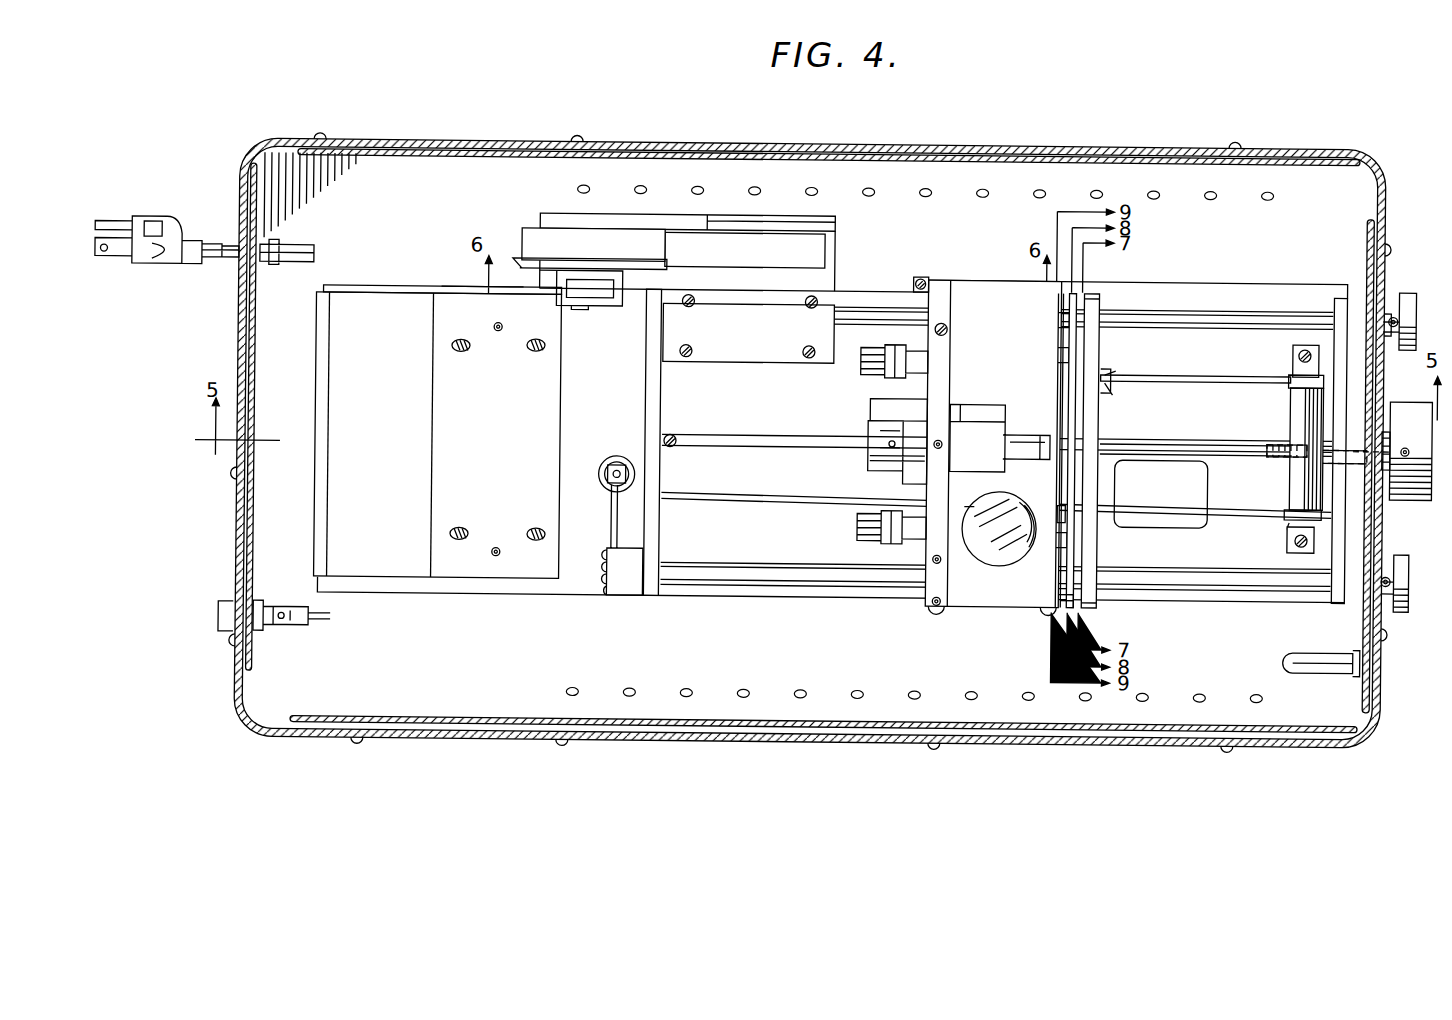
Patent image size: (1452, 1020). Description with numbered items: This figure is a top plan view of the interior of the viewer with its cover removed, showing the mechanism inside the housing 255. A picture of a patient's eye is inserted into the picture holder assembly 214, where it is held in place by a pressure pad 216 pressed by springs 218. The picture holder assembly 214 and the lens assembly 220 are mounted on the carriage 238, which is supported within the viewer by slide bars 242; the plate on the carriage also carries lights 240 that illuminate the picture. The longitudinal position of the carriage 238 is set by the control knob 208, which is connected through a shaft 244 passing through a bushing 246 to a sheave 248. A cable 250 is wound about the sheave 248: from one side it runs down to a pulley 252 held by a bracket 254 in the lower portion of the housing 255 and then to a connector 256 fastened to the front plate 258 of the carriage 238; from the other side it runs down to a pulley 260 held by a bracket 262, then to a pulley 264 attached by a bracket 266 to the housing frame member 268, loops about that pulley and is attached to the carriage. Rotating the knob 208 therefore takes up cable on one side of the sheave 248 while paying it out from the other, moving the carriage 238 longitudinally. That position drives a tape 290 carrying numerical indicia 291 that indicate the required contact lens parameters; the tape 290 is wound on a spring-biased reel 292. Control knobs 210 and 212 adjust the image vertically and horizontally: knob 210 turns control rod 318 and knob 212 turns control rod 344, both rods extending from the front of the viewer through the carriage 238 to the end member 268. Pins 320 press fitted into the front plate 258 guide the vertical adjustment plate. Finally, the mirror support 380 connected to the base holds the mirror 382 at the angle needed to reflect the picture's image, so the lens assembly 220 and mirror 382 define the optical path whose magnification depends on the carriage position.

The control knob 208 is at (1410, 494).
The control knob 210 is at (1403, 600).
The control knob 212 is at (1408, 300).
The picture holder assembly 214 is at (1070, 598).
The pressure pad 216 is at (1055, 420).
The springs 218 is at (1058, 500).
The lens assembly 220 is at (1050, 445).
The carriage 238 is at (930, 490).
The lights 240 is at (990, 500).
The slide bars 242 is at (862, 323).
The shaft 244 is at (1325, 448).
The bushing 246 is at (1330, 452).
The sheave 248 is at (1310, 410).
The cable 250 is at (742, 495).
The pulley 252 is at (1290, 375).
The bracket 254 is at (1292, 349).
The housing 255 is at (1364, 738).
The connector 256 is at (1104, 380).
The front plate 258 is at (1098, 338).
The pulley 260 is at (1300, 528).
The bracket 262 is at (1300, 550).
The pulley 264 is at (618, 459).
The bracket 266 is at (605, 548).
The housing frame member 268 is at (650, 590).
The tape 290 is at (775, 247).
The numerical indicia 291 is at (628, 242).
The reel 292 is at (530, 230).
The control rod 318 is at (790, 578).
The pins 320 is at (1098, 396).
The control rod 344 is at (880, 305).
The mirror support 380 is at (456, 306).
The mirror 382 is at (392, 318).